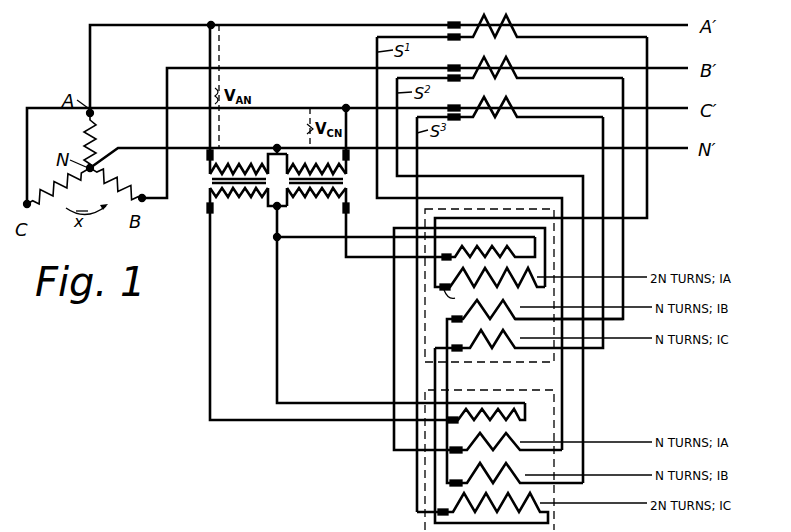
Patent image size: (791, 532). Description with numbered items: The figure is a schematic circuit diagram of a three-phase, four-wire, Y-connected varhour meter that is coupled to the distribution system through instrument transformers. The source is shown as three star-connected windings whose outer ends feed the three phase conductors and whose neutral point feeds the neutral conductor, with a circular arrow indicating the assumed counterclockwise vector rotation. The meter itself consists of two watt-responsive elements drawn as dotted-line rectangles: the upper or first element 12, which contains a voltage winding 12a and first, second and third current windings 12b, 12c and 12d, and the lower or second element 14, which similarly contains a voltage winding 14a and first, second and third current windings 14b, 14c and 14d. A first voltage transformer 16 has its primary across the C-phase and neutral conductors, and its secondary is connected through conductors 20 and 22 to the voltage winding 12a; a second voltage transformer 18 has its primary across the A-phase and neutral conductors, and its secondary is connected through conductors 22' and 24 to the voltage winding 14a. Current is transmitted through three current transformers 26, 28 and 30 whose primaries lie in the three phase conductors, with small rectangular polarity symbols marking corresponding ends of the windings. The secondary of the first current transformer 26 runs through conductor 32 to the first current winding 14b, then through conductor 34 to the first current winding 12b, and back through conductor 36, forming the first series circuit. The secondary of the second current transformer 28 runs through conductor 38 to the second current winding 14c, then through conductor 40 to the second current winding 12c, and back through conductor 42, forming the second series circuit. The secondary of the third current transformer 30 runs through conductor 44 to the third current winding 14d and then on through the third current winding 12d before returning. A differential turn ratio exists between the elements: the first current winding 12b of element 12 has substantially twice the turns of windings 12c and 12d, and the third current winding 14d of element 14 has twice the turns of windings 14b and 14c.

The first element 12 is at (506, 239).
The voltage winding 12a is at (515, 251).
The first current winding 12b is at (450, 286).
The second current winding 12c is at (470, 310).
The third current winding 12d is at (470, 339).
The second element 14 is at (490, 439).
The voltage winding 14a is at (525, 413).
The first current winding 14b is at (447, 441).
The second current winding 14c is at (447, 477).
The third current winding 14d is at (438, 504).
The first voltage transformer 16 is at (313, 167).
The second voltage transformer 18 is at (247, 126).
The conductor 20 is at (356, 260).
The conductor 22 is at (406, 255).
The conductor 22' is at (401, 304).
The conductor 24 is at (210, 312).
The first current transformer 26 is at (484, 38).
The second current transformer 28 is at (484, 79).
The third current transformer 30 is at (494, 118).
The conductor 32 is at (377, 82).
The conductor 34 is at (394, 365).
The conductor 36 is at (649, 165).
The conductor 38 is at (397, 135).
The conductor 40 is at (449, 374).
The conductor 42 is at (623, 193).
The conductor 44 is at (424, 162).